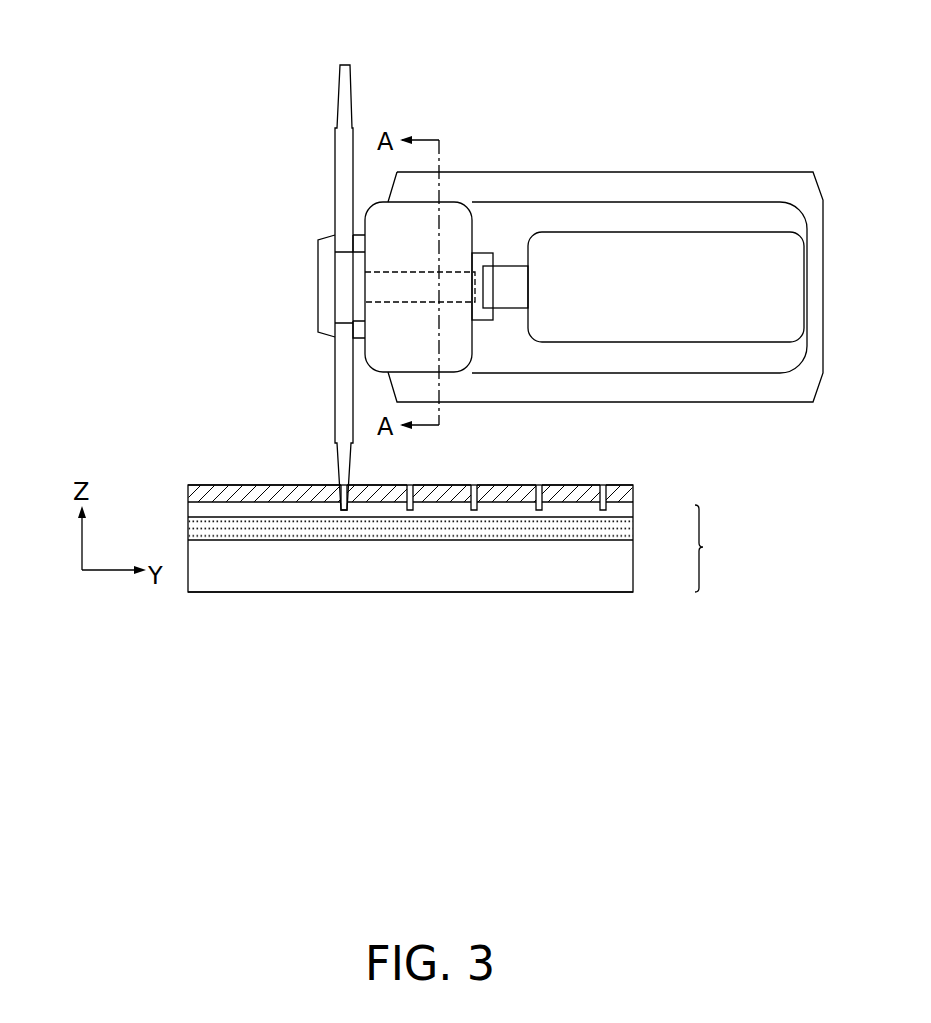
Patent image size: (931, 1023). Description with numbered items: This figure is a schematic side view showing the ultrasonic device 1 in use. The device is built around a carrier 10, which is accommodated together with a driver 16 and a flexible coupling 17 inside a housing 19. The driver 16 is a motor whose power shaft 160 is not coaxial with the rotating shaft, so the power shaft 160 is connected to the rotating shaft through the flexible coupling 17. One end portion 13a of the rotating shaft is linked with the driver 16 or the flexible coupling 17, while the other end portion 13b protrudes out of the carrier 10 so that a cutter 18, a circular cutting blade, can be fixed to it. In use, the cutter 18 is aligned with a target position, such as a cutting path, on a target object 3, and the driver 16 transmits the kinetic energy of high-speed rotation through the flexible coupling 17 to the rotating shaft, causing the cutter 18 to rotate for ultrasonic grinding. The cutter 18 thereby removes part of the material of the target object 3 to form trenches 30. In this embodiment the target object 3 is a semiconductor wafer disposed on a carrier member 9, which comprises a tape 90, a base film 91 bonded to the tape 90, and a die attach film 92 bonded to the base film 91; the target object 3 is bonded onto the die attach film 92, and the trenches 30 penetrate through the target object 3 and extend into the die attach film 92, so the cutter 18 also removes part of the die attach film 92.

The ultrasonic device 1 is at (275, 68).
The cutter 18 is at (335, 167).
The carrier 10 is at (453, 212).
The flexible coupling 17 is at (483, 258).
The power shaft 160 is at (508, 273).
The driver 16 is at (667, 247).
The housing 19 is at (722, 185).
The target object 3 is at (373, 290).
The end portion of the rotating shaft 13b is at (325, 313).
The end portion of the rotating shaft 13a is at (459, 292).
The trenches 30 is at (602, 485).
The carrier member 9 is at (455, 538).
The die attach film 92 is at (628, 510).
The base film 91 is at (630, 535).
The tape 90 is at (630, 567).